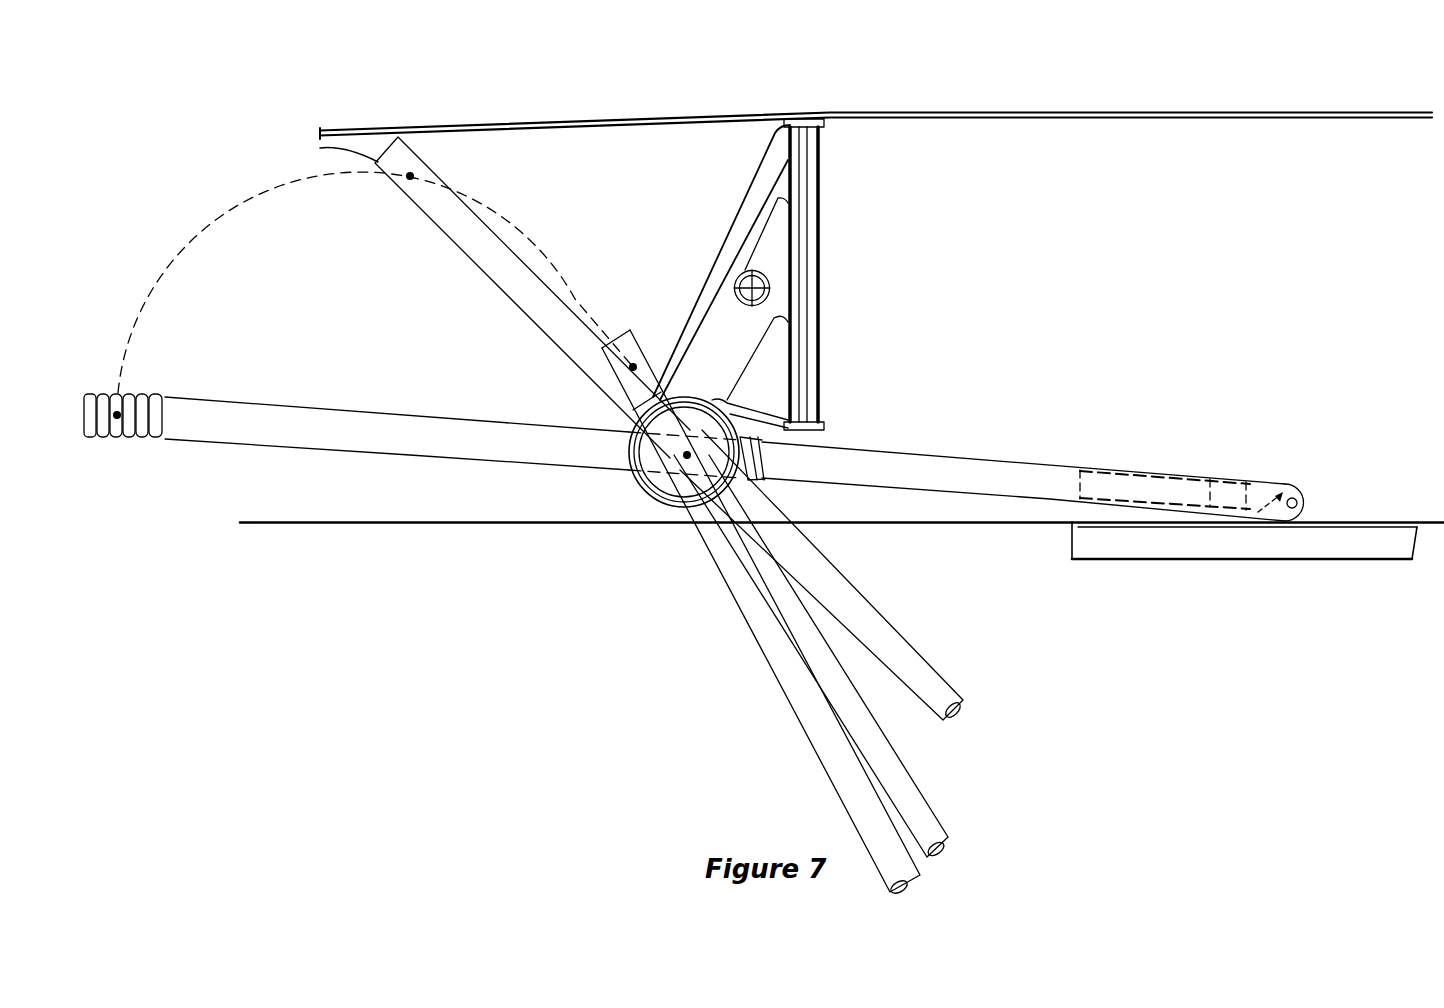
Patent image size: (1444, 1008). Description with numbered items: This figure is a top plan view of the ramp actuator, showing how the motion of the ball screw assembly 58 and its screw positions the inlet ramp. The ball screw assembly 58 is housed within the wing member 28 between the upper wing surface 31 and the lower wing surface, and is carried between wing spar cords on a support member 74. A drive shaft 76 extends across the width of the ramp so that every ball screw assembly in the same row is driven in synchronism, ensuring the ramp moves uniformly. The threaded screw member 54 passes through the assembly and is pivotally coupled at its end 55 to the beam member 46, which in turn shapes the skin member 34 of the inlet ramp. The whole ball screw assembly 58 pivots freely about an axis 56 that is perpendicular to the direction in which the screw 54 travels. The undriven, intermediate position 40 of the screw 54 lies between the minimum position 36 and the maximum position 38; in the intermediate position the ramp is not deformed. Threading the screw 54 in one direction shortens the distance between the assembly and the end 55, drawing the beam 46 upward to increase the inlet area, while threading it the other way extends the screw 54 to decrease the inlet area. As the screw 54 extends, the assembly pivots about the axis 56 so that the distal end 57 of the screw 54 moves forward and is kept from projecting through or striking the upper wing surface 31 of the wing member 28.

The wing member 28 is at (361, 132).
The upper wing surface 31 is at (527, 126).
The skin member 34 is at (1315, 560).
The minimum position 36 is at (1343, 518).
The maximum position 38 is at (935, 878).
The intermediate position 40 is at (960, 680).
The beam member 46 is at (1372, 550).
The threaded screw member 54 is at (1038, 460).
The end coupled to the beam 55 is at (1305, 490).
The pivot axis 56 is at (632, 479).
The distal end of screw 57 is at (650, 298).
The ball screw assembly 58 is at (612, 292).
The support member 74 is at (810, 370).
The drive shaft 76 is at (748, 282).